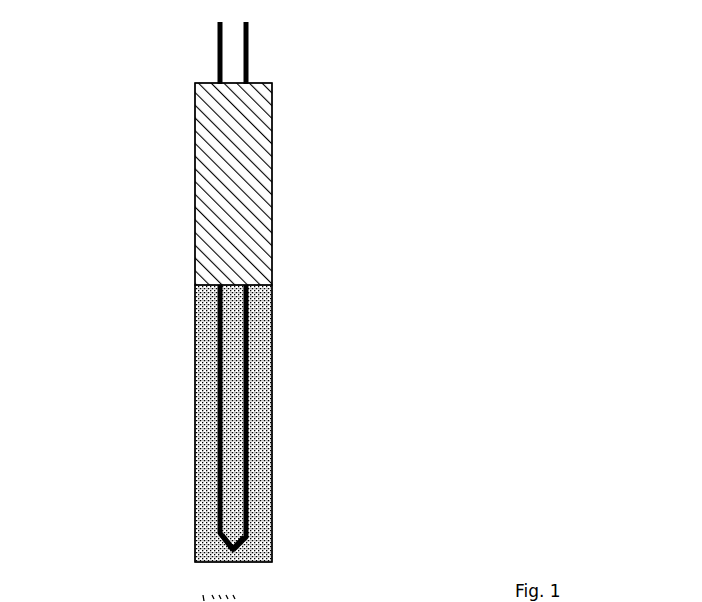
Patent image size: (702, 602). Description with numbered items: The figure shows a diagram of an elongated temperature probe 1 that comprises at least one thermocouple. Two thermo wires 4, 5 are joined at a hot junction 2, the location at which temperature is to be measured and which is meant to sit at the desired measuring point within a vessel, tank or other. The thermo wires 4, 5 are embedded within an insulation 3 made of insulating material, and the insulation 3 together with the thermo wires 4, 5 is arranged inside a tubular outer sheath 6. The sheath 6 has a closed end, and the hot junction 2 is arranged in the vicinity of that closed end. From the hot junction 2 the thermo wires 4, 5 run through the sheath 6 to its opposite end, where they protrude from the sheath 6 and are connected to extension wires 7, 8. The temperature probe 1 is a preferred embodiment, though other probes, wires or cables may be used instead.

The temperature probe 1 is at (85, 62).
The hot junction 2 is at (239, 553).
The insulation 3 is at (261, 402).
The thermo wire 4 is at (210, 388).
The thermo wire 5 is at (251, 347).
The outer sheath 6 is at (276, 163).
The extension wire 7 is at (273, 40).
The extension wire 8 is at (216, 60).